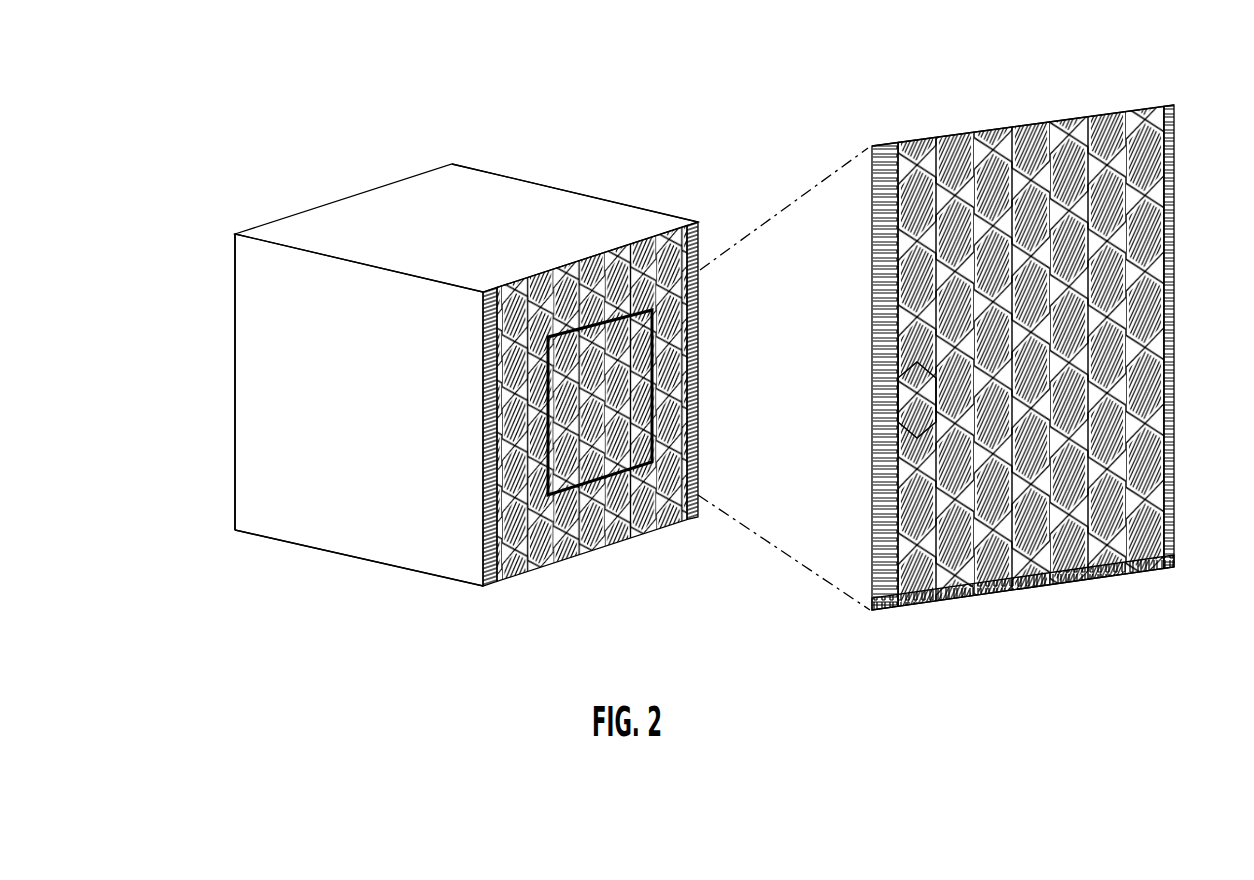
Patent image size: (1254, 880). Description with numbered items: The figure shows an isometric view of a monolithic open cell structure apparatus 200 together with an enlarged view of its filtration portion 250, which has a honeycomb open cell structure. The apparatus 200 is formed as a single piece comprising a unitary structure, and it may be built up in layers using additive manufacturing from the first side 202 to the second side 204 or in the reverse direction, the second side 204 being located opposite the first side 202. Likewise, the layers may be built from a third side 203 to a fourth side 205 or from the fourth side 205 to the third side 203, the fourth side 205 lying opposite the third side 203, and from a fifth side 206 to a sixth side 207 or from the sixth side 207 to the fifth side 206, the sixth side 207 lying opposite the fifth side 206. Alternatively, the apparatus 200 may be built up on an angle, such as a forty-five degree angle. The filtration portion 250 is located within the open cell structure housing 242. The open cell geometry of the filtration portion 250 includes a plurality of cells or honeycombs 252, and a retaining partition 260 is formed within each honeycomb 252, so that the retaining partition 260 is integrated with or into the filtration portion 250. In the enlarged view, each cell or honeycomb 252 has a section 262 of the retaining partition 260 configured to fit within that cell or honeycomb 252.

The monolithic open cell structure apparatus 200 is at (191, 146).
The first side 202 is at (506, 581).
The third side 203 is at (272, 517).
The second side 204 is at (220, 506).
The fourth side 205 is at (709, 281).
The fifth side 206 is at (369, 179).
The sixth side 207 is at (434, 585).
The open cell structure housing 242 is at (538, 215).
The filtration portion 250 is at (648, 275).
The honeycomb 252 is at (693, 462).
The retaining partition 260 is at (939, 575).
The section 262 is at (870, 393).